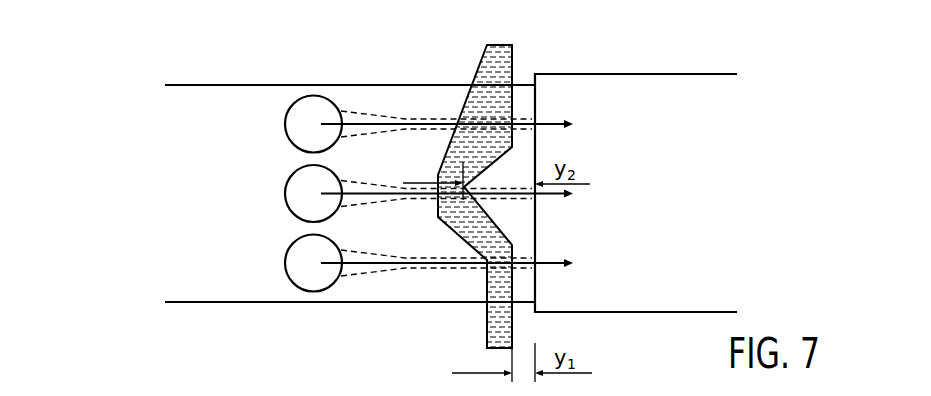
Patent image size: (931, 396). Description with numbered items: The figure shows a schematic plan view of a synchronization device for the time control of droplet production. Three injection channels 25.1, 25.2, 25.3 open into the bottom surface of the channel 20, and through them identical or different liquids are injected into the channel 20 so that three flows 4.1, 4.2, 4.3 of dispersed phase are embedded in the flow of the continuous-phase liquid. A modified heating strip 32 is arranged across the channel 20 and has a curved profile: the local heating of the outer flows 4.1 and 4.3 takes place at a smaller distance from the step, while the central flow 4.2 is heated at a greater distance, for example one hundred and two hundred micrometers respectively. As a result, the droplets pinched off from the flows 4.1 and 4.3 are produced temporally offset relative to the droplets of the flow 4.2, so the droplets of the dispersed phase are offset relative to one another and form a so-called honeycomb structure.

The channel 20 is at (246, 101).
The modified heating strip 32 is at (490, 73).
The injection channel 25.1 is at (303, 129).
The injection channel 25.2 is at (303, 197).
The injection channel 25.3 is at (303, 277).
The flow 4.1 is at (370, 117).
The flow 4.2 is at (420, 184).
The flow 4.3 is at (450, 258).